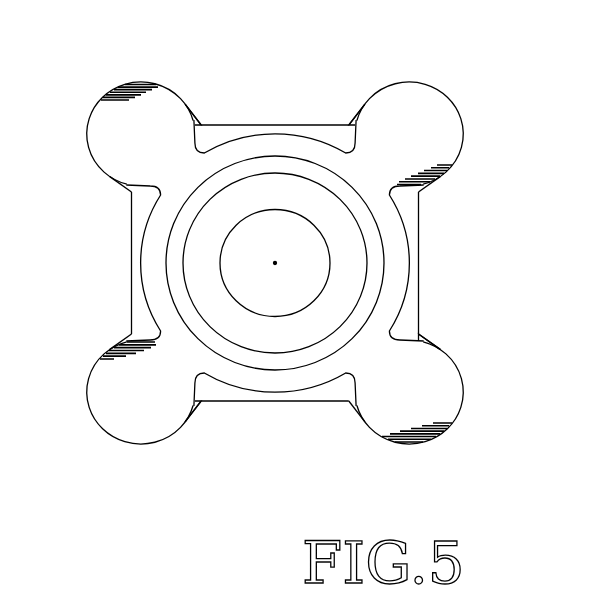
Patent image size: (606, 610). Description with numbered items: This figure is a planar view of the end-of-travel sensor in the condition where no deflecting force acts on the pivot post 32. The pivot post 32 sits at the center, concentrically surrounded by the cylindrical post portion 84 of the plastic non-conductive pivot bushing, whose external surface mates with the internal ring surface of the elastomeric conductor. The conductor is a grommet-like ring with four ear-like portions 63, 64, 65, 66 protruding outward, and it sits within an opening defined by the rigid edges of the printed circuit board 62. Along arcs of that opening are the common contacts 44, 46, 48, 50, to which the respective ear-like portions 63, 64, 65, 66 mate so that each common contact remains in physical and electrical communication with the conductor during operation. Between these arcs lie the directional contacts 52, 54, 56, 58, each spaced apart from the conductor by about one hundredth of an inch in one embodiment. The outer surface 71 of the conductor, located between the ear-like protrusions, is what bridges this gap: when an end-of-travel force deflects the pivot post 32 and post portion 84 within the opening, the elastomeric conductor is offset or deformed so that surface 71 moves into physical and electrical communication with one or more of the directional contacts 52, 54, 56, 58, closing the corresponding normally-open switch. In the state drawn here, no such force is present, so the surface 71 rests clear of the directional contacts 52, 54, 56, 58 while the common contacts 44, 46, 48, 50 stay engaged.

The printed circuit board 62 is at (50, 91).
The common contact 44 is at (142, 83).
The common contact 46 is at (458, 113).
The common contact 48 is at (461, 418).
The common contact 50 is at (102, 430).
The directional contact 52 is at (288, 124).
The directional contact 54 is at (420, 252).
The directional contact 56 is at (273, 402).
The directional contact 58 is at (132, 273).
The ear-like portion 63 is at (201, 123).
The ear-like portion 64 is at (348, 123).
The ear-like portion 65 is at (419, 333).
The ear-like portion 66 is at (204, 402).
The outer surface 71 is at (248, 138).
The cylindrical post portion 84 is at (173, 290).
The pivot rod 32 is at (332, 265).